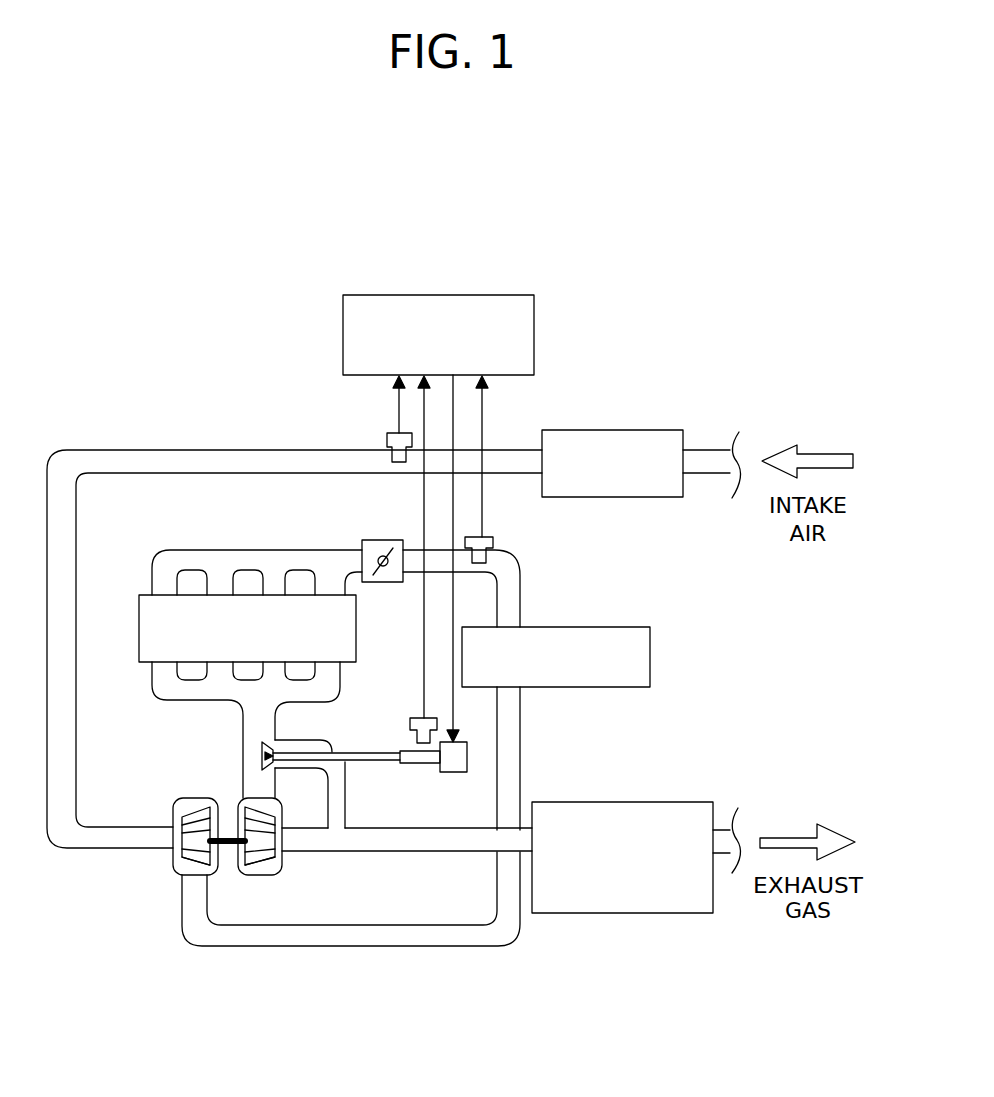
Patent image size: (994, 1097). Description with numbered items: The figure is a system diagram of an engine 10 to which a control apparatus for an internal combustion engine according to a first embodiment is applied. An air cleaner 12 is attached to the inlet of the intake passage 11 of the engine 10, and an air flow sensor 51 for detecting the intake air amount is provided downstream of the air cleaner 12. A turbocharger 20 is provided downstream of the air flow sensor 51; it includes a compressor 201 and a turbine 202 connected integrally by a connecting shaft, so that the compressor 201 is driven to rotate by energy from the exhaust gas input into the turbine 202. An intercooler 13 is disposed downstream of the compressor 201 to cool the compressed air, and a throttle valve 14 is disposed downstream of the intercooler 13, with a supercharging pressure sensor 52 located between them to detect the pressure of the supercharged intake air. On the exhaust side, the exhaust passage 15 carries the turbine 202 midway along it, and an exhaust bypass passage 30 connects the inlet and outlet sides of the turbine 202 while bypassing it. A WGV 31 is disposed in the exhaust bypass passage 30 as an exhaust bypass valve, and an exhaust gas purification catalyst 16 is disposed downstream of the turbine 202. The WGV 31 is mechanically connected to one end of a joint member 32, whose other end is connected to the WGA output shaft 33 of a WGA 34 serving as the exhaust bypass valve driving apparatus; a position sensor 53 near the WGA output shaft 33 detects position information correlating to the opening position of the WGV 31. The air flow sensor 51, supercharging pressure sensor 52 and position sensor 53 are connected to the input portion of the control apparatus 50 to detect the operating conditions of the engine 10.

The engine 10 is at (229, 674).
The intake passage 11 is at (294, 622).
The air cleaner 12 is at (641, 434).
The intercooler 13 is at (578, 647).
The throttle valve 14 is at (372, 535).
The exhaust passage 15 is at (407, 865).
The exhaust gas purification catalyst 16 is at (636, 829).
The turbocharger 20 is at (160, 873).
The compressor 201 is at (157, 853).
The turbine 202 is at (97, 888).
The exhaust bypass passage 30 is at (332, 784).
The WGV 31 is at (218, 746).
The joint member 32 is at (336, 731).
The WGA output shaft 33 is at (413, 788).
The WGA 34 is at (444, 777).
The control apparatus 50 is at (419, 507).
The air flow sensor 51 is at (379, 421).
The supercharging pressure sensor 52 is at (500, 525).
The position sensor 53 is at (406, 708).